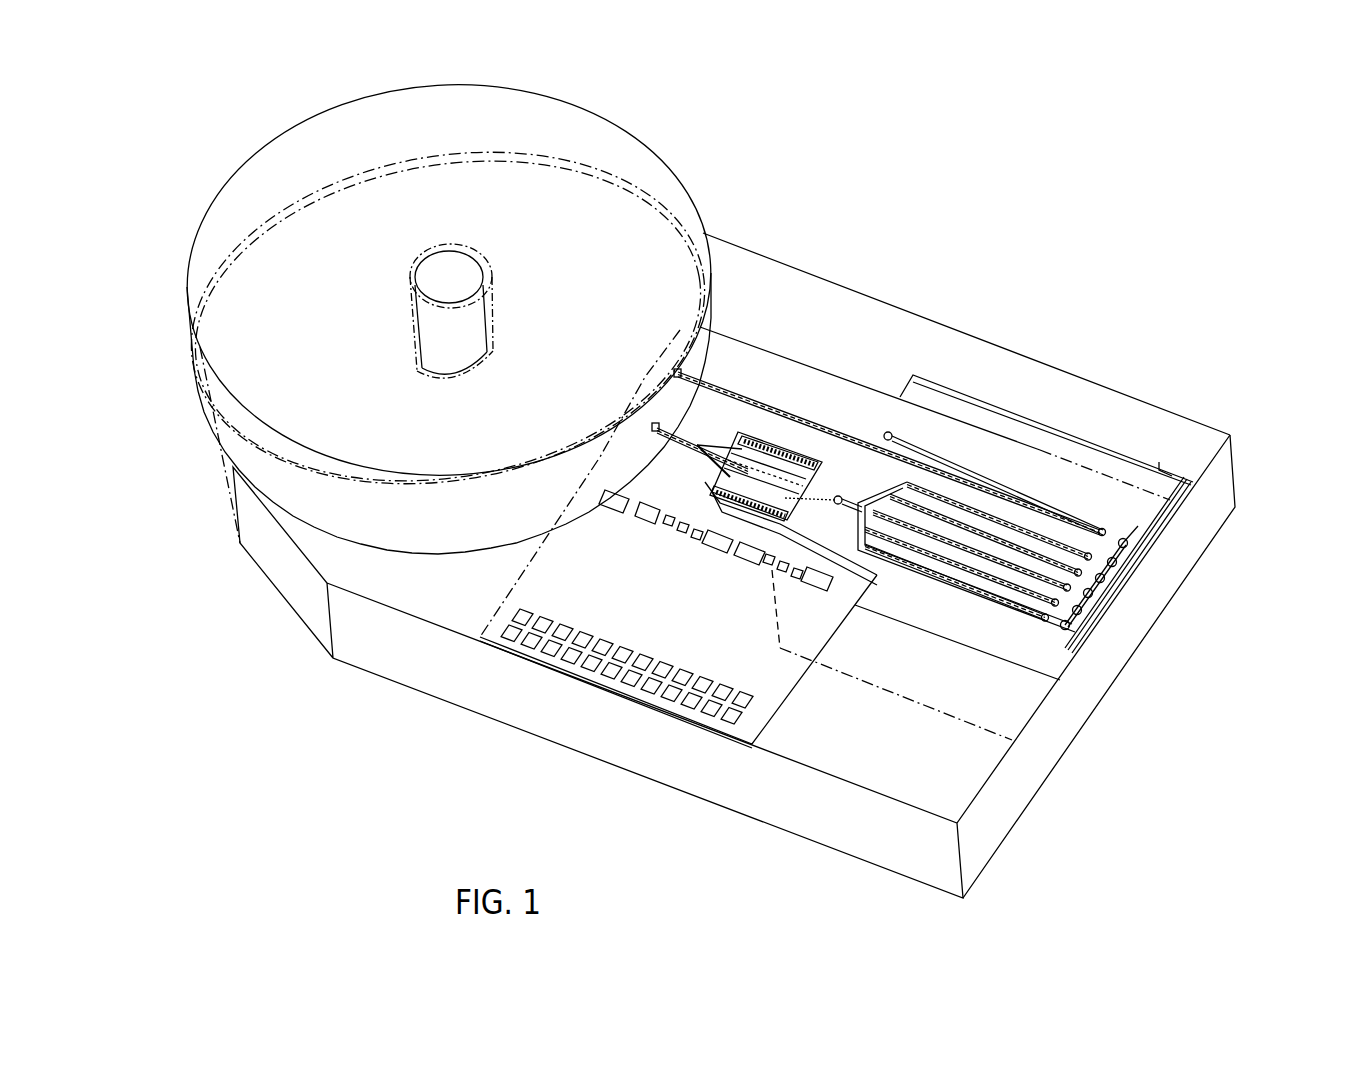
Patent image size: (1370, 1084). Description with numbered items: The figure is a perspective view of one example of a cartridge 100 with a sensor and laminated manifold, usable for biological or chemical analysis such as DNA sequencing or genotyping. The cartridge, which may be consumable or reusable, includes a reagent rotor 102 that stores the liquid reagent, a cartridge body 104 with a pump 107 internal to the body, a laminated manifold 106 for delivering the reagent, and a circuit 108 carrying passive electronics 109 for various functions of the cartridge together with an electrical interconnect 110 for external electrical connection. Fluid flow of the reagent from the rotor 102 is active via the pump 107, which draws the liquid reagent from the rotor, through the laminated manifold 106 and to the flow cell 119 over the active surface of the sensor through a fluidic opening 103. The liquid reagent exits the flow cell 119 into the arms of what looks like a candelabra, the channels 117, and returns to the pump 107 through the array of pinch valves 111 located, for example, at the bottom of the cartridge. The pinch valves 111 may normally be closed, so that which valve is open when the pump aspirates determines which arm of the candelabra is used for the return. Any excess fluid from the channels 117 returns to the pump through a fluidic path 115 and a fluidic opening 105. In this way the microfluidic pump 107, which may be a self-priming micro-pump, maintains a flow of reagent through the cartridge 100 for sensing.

The cartridge 100 is at (1028, 272).
The reagent rotor 102 is at (650, 160).
The fluidic opening 103 is at (660, 427).
The cartridge body 104 is at (1043, 762).
The fluidic opening 105 is at (888, 432).
The laminated manifold 106 is at (1013, 450).
The pump 107 is at (1190, 480).
The circuit 108 is at (773, 663).
The passive electronics 109 is at (613, 552).
The electrical interconnect 110 is at (567, 673).
The array of pinch valves 111 is at (1167, 580).
The fluidic path 115 is at (960, 458).
The channels 117 is at (1040, 525).
The flow cell 119 is at (787, 437).